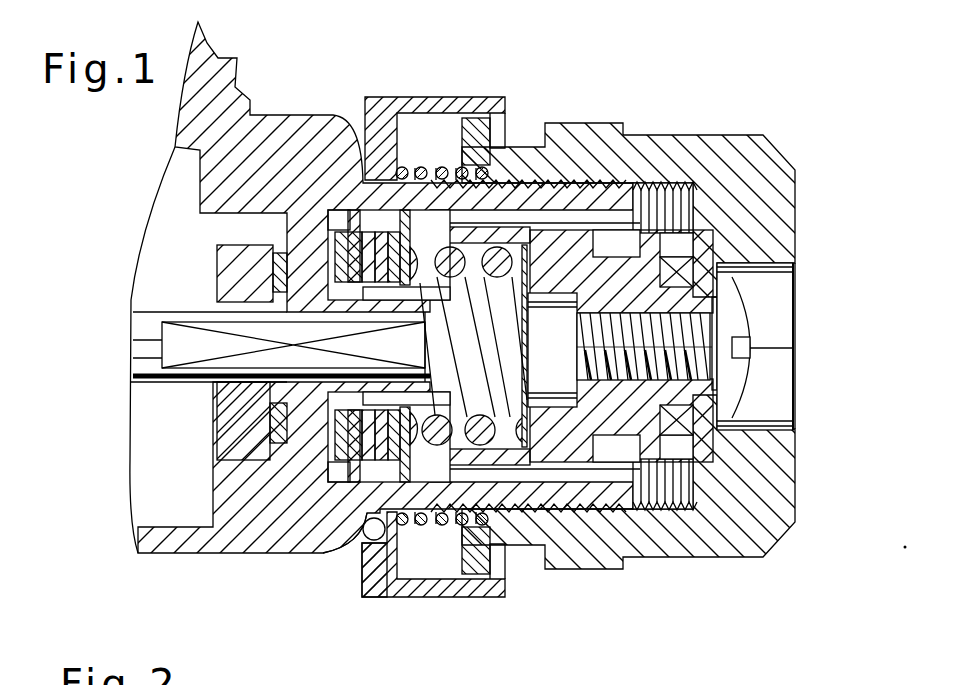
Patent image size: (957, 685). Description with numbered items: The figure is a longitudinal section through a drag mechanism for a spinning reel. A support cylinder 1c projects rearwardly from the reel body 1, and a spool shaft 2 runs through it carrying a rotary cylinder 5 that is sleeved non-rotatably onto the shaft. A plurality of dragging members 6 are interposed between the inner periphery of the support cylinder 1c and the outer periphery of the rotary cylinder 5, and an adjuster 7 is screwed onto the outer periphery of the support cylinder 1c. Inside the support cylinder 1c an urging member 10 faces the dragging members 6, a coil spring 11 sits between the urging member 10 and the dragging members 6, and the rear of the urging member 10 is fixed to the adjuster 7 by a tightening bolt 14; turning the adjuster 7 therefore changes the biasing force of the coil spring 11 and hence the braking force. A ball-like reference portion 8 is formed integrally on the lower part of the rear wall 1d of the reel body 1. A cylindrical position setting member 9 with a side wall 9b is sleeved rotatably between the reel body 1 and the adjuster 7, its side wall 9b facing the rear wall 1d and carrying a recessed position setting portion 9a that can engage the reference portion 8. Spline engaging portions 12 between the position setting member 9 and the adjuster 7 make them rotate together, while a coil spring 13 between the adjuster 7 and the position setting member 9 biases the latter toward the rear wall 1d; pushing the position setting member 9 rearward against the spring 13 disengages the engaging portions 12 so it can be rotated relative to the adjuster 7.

The reel body 1 is at (252, 103).
The support cylinder 1c is at (560, 500).
The rear wall 1d is at (358, 528).
The spool shaft 2 is at (133, 378).
The rotary cylinder 5 is at (308, 247).
The dragging members 6 is at (420, 417).
The adjuster 7 is at (737, 145).
The reference portion 8 is at (363, 542).
The position setting member 9 is at (450, 596).
The position setting portion 9a is at (373, 552).
The side wall 9b is at (410, 147).
The urging member 10 is at (640, 263).
The coil spring 11 is at (503, 247).
The engaging portions 12 is at (470, 122).
The coil spring 13 is at (423, 520).
The tightening bolt 14 is at (738, 308).